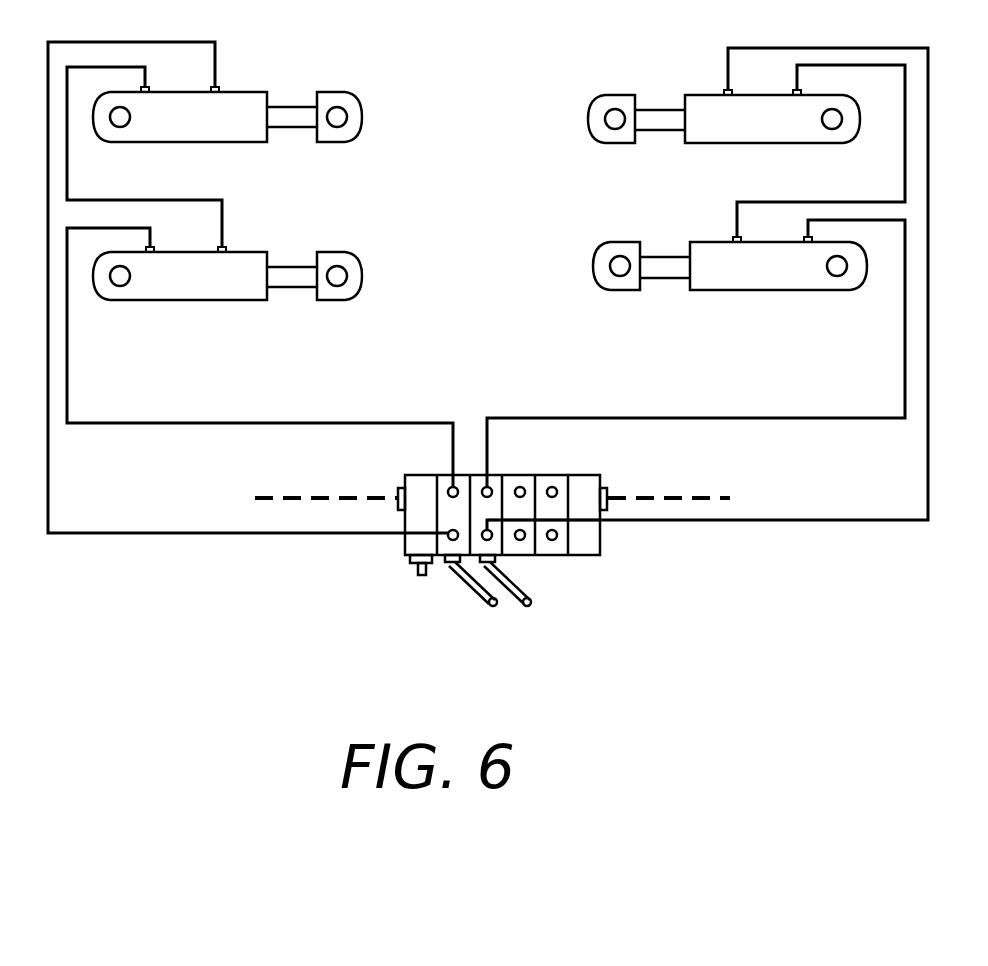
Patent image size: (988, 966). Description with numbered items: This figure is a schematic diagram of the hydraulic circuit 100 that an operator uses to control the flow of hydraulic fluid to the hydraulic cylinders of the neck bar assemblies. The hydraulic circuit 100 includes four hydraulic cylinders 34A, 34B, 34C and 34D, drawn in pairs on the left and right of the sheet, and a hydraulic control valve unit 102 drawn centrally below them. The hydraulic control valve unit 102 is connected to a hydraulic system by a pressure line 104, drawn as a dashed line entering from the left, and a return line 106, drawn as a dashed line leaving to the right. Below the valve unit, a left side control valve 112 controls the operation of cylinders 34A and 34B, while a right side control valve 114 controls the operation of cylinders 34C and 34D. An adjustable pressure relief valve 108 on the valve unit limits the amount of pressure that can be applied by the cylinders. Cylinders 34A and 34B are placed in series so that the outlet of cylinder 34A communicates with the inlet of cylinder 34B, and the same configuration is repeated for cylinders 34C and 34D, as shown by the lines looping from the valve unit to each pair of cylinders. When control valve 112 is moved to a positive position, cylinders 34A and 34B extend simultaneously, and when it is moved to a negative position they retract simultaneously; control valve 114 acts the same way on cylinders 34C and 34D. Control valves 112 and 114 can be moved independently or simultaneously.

The hydraulic circuit 100 is at (280, 612).
The hydraulic control valve unit 102 is at (562, 475).
The pressure line 104 is at (325, 493).
The return line 106 is at (675, 493).
The adjustable pressure relief valve 108 is at (417, 583).
The left side control valve 112 is at (520, 585).
The right side control valve 114 is at (477, 585).
The hydraulic cylinder 34A is at (724, 116).
The hydraulic cylinder 34B is at (730, 263).
The hydraulic cylinder 34C is at (227, 114).
The hydraulic cylinder 34D is at (227, 273).